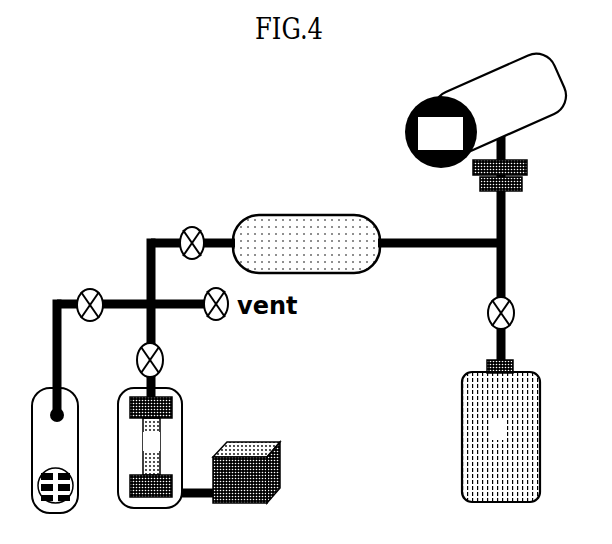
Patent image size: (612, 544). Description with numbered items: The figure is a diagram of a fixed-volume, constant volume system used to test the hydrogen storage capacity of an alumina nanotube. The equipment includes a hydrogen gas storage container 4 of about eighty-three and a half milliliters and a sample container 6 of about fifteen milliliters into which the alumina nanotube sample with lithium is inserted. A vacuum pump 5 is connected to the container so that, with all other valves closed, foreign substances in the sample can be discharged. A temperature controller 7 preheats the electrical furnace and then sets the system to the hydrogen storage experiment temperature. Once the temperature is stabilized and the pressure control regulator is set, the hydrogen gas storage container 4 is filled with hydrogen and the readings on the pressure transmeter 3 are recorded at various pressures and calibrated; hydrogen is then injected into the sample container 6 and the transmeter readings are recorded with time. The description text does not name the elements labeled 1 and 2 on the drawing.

The sample container 1 is at (501, 431).
The valve 2 is at (305, 291).
The pressure transmeter 3 is at (488, 119).
The hydrogen gas storage container 4 is at (306, 244).
The vacuum pump 5 is at (55, 450).
The sample container 6 is at (150, 448).
The temperature controller 7 is at (253, 442).